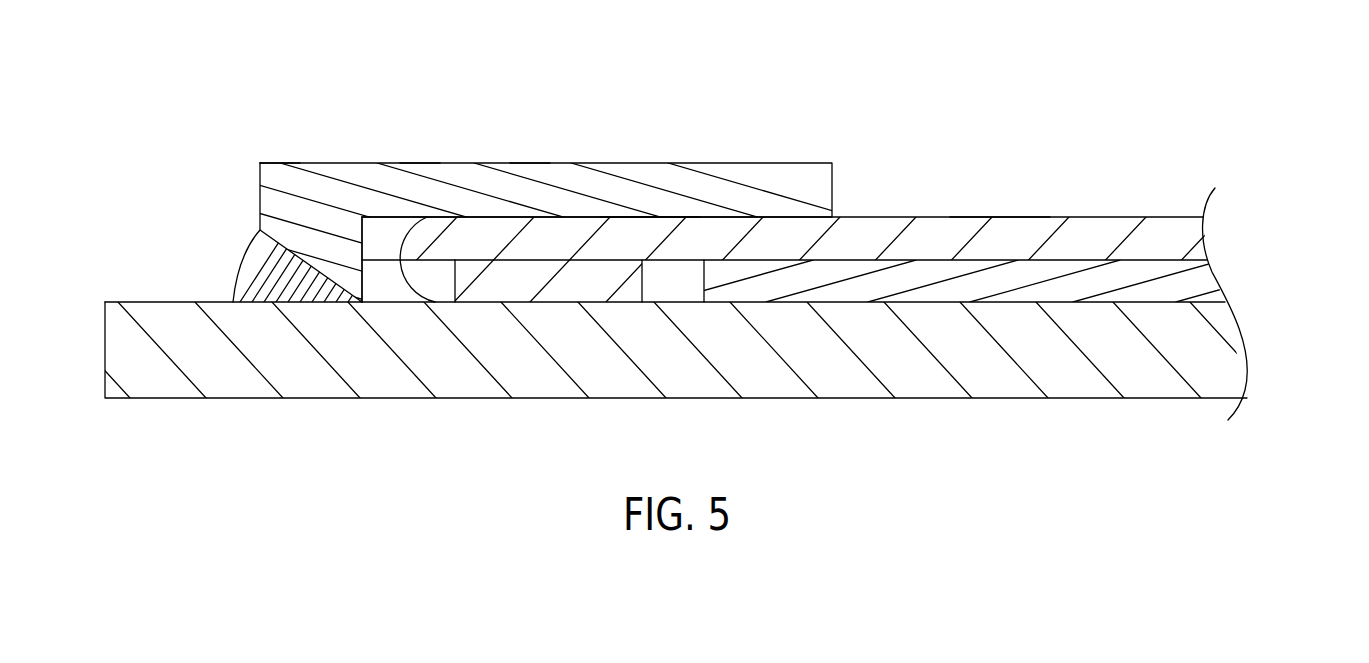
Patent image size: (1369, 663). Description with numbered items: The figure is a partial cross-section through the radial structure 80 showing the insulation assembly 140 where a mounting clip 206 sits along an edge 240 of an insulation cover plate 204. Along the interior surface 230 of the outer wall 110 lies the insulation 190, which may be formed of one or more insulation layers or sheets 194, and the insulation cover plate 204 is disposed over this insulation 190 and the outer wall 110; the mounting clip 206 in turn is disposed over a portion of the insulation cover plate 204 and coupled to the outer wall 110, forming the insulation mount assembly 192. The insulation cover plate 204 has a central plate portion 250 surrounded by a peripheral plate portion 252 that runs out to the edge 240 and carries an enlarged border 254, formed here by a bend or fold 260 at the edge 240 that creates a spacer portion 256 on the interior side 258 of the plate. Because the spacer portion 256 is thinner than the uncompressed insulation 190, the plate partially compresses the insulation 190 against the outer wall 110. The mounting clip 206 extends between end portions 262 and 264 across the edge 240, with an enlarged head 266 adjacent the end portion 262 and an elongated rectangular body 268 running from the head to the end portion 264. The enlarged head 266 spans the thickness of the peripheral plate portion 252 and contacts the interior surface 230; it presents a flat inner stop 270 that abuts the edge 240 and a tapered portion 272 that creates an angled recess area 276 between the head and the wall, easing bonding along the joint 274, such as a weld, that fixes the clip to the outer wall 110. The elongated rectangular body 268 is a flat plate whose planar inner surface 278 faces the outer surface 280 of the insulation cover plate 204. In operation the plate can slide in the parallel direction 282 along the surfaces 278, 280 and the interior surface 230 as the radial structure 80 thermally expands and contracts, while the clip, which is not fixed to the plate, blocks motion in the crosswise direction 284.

The radial structure 80 is at (1190, 426).
The outer wall 110 is at (105, 351).
The insulation assembly 140 is at (1163, 122).
The insulation 190 is at (1228, 276).
The insulation mount assembly 192 is at (966, 184).
The insulation layer or sheet 194 is at (1117, 282).
The insulation cover plate 204 is at (1213, 218).
The mounting clip 206 is at (419, 154).
The interior surface 230 is at (183, 302).
The edge 240 is at (423, 297).
The central plate portion 250 is at (1113, 216).
The peripheral plate portion 252 is at (555, 310).
The enlarged border 254 is at (489, 308).
The spacer portion 256 is at (632, 285).
The interior side 258 is at (930, 262).
The bend or fold 260 is at (467, 262).
The end portion 262 is at (259, 193).
The end portion 264 is at (833, 186).
The enlarged head 266 is at (283, 151).
The elongated rectangular body 268 is at (524, 155).
The flat inner stop 270 is at (364, 300).
The tapered portion 272 is at (310, 277).
The joint 274 is at (257, 241).
The angled recess area 276 is at (224, 268).
The planar inner surface 278 is at (637, 217).
The outer surface 280 is at (1013, 216).
The parallel direction 282 is at (1230, 232).
The crosswise direction 284 is at (475, 150).